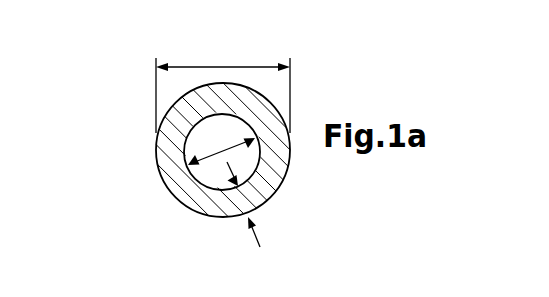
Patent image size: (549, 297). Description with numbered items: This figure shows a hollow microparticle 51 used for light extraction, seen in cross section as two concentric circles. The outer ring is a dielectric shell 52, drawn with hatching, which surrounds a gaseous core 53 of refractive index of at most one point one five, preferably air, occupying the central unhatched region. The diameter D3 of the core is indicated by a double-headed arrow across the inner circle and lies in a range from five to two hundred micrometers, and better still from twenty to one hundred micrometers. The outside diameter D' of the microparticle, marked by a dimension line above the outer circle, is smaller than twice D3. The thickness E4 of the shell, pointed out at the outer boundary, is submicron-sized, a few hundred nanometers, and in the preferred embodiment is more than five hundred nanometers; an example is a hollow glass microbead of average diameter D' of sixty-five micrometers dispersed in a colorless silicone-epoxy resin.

The tubular element / hollow body 51 is at (125, 117).
The dielectric shell 52 is at (197, 198).
The inner cavity / bore 53 is at (172, 153).
The diameter of the microparticles D' is at (223, 85).
The diameter of the core D3 is at (221, 155).
The thickness of the shell E4 is at (270, 232).